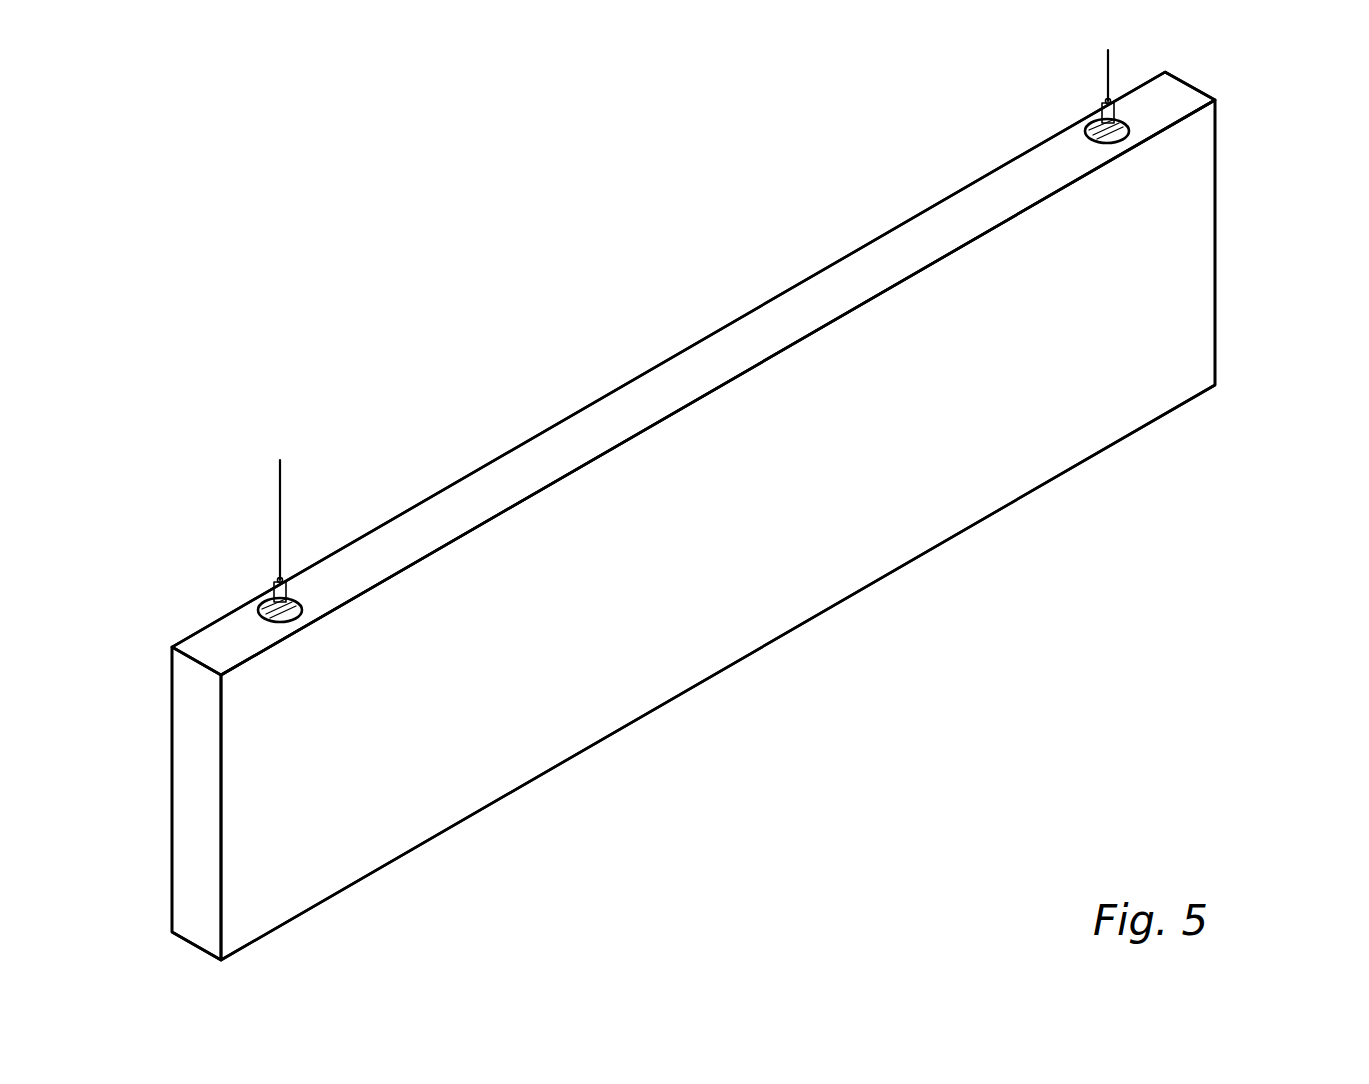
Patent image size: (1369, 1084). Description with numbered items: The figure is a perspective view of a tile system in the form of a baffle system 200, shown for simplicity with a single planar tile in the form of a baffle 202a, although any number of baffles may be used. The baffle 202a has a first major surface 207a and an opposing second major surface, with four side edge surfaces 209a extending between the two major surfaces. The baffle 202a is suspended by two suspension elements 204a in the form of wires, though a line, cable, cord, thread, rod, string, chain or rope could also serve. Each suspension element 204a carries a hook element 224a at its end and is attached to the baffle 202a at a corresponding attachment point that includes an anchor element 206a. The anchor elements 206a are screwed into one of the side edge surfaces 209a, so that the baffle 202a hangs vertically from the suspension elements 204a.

The baffle system 200 is at (702, 499).
The baffle 202a is at (1215, 258).
The suspension element 204a is at (280, 508).
The anchor element 206a is at (262, 607).
The first major surface 207a is at (592, 728).
The side edge surface 209a is at (514, 463).
The hook element 224a is at (277, 582).